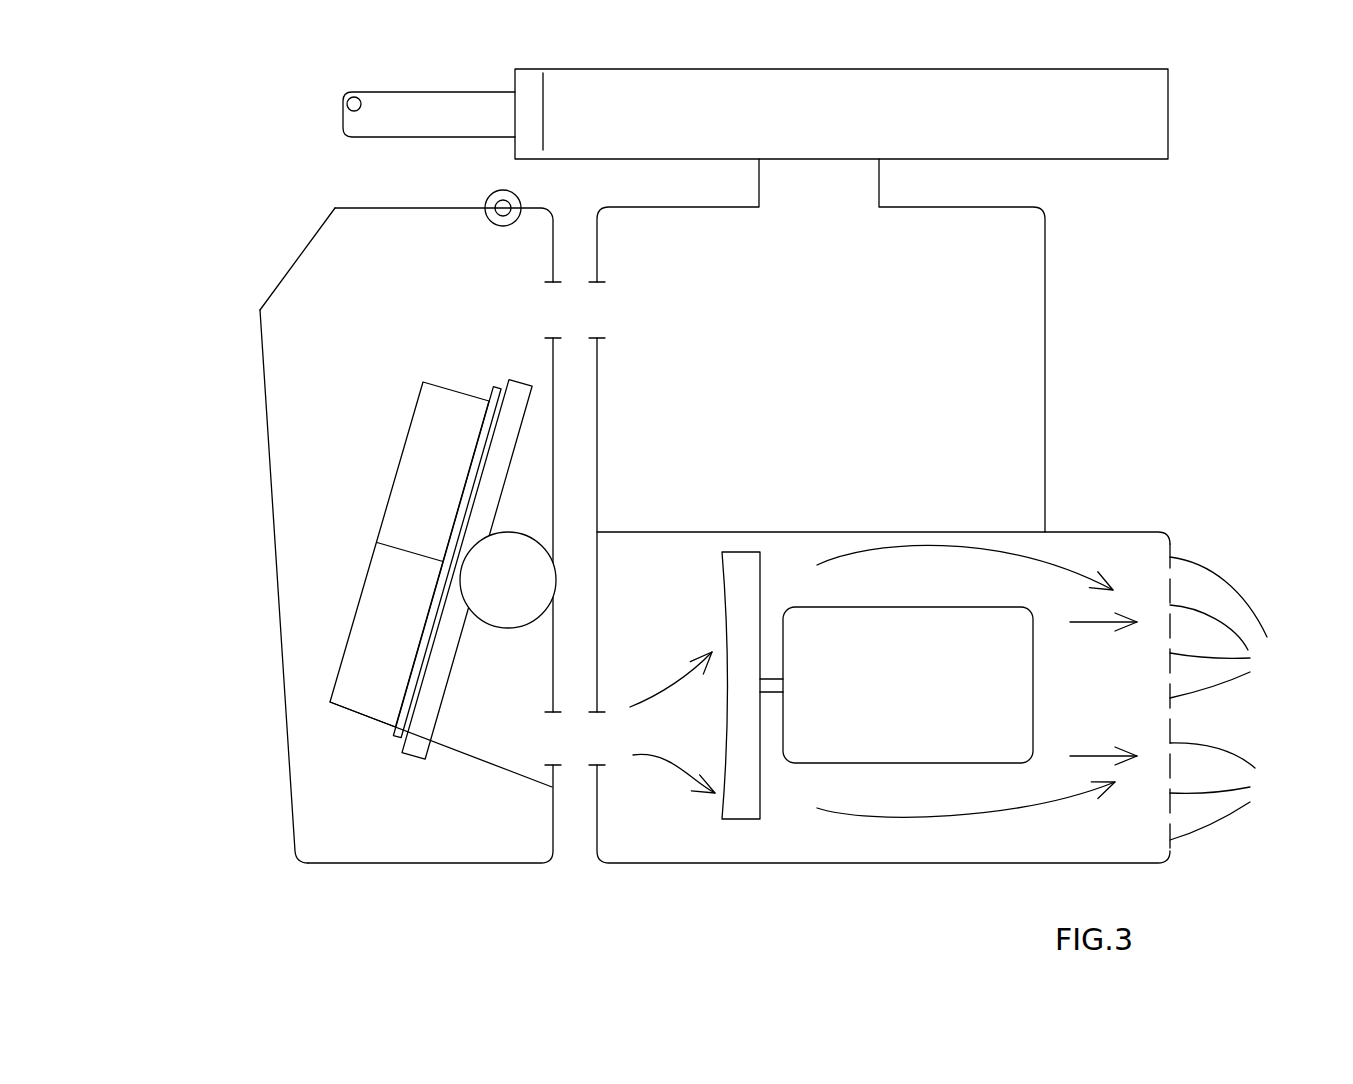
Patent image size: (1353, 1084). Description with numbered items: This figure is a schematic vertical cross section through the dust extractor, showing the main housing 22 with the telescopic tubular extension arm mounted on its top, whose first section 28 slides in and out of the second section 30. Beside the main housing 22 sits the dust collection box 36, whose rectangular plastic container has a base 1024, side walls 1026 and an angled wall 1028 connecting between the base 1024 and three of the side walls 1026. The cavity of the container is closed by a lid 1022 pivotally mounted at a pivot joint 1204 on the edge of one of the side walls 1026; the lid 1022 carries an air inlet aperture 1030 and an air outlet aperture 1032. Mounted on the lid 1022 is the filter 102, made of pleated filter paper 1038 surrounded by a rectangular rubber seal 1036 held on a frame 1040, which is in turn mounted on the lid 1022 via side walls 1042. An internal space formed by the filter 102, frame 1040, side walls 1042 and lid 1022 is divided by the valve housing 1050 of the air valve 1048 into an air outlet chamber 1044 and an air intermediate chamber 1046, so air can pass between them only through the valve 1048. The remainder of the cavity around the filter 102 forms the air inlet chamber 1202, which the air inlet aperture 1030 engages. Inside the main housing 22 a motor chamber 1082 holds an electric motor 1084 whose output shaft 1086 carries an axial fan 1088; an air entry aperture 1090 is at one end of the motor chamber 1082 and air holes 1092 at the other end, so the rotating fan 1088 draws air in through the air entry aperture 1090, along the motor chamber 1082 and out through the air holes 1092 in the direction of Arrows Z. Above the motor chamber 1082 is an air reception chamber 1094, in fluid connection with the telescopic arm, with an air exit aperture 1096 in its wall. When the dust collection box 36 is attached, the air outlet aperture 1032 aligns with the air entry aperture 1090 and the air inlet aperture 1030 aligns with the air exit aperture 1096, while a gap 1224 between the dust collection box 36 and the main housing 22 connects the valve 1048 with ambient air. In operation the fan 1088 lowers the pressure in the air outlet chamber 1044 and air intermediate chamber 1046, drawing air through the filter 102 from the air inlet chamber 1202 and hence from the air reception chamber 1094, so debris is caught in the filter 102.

The main housing 22 is at (1088, 532).
The first section of telescopic arm 28 is at (388, 100).
The second section of telescopic arm 30 is at (658, 124).
The dust collection box 36 is at (178, 409).
The filter 102 is at (473, 583).
The lid 1022 is at (553, 823).
The base 1024 is at (199, 586).
The side walls 1026 is at (383, 210).
The angled wall 1028 is at (297, 258).
The air inlet aperture 1030 is at (565, 302).
The air outlet aperture 1032 is at (563, 747).
The rubber seal 1036 is at (493, 393).
The pleated filter paper 1038 is at (420, 508).
The frame 1040 is at (520, 385).
The side walls of frame 1042 is at (540, 393).
The air outlet chamber 1044 is at (517, 738).
The air intermediate chamber 1046 is at (530, 508).
The air valve 1048 is at (515, 638).
The valve housing 1050 is at (492, 575).
The motor chamber 1082 is at (956, 599).
The electric motor 1084 is at (949, 714).
The output shaft 1086 is at (770, 682).
The axial fan 1088 is at (740, 610).
The air entry aperture 1090 is at (603, 733).
The air holes 1092 is at (1241, 698).
The air reception chamber 1094 is at (941, 385).
The air exit aperture 1096 is at (603, 331).
The air inlet chamber 1202 is at (404, 292).
The pivot joint 1204 is at (498, 203).
The gap 1224 is at (572, 537).